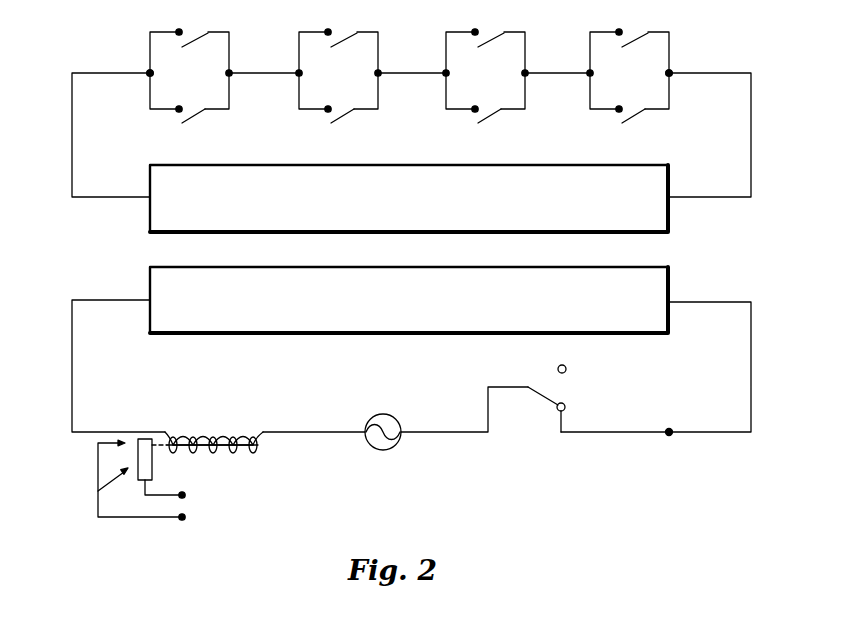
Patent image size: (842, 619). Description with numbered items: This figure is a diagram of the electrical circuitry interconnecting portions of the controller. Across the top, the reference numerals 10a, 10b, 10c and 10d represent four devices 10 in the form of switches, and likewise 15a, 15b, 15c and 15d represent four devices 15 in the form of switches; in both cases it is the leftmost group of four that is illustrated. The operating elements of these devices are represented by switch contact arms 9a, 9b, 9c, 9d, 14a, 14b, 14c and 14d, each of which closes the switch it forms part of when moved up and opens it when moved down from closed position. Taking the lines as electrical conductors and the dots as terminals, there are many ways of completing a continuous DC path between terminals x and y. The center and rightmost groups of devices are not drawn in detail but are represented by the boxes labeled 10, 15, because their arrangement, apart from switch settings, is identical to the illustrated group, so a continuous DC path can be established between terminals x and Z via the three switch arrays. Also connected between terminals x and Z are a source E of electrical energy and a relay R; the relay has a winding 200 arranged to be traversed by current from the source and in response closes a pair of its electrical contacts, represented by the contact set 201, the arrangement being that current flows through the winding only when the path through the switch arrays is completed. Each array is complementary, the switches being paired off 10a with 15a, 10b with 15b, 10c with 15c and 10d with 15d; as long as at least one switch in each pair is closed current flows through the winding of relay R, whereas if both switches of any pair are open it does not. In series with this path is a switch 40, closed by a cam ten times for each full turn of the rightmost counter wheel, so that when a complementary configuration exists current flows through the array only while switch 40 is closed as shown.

The switch contact arm 9a is at (200, 44).
The switch contact arm 9b is at (349, 44).
The switch contact arm 9c is at (496, 44).
The switch contact arm 9d is at (640, 44).
The switch device 10a is at (183, 28).
The switch device 10b is at (332, 28).
The switch device 10c is at (479, 28).
The switch device 10d is at (623, 28).
The switch device 15a is at (192, 100).
The switch device 15b is at (341, 100).
The switch device 15c is at (488, 100).
The switch device 15d is at (632, 100).
The switch contact arm 14a is at (193, 117).
The switch contact arm 14b is at (342, 117).
The switch contact arm 14c is at (489, 117).
The switch contact arm 14d is at (633, 117).
The switch device 10 is at (439, 217).
The switch device 15 is at (439, 316).
The terminal x is at (148, 71).
The terminal y is at (674, 71).
The relay winding 200 is at (222, 430).
The relay R is at (212, 460).
The relay contact set 201 is at (98, 491).
The source of electrical energy E is at (395, 418).
The switch 40 is at (583, 398).
The terminal Z is at (669, 436).